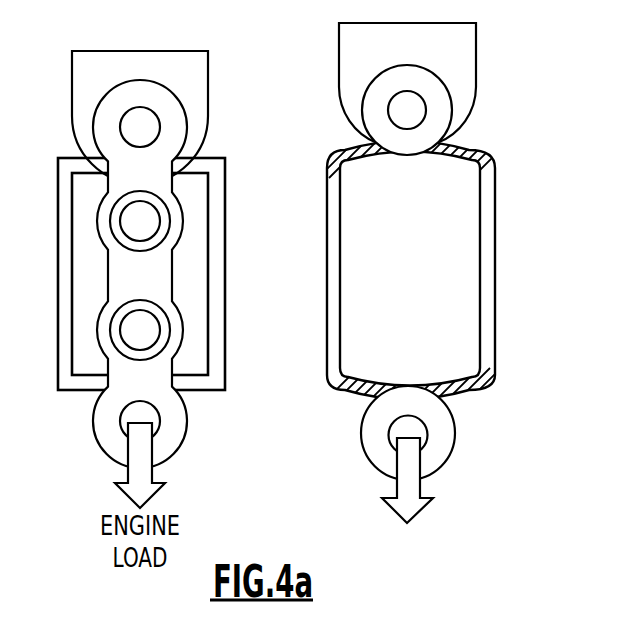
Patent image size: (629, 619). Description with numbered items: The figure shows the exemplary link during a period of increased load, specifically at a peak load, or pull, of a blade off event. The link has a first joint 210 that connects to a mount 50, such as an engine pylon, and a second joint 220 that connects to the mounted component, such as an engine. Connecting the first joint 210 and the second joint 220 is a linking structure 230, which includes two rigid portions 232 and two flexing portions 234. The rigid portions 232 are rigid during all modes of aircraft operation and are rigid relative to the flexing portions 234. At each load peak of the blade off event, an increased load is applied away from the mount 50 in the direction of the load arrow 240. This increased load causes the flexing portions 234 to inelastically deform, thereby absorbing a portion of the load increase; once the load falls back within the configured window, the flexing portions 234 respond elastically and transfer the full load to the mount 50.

The mount 50 is at (467, 46).
The first joint 210 is at (445, 100).
The second joint 220 is at (378, 447).
The linking structure 230 is at (448, 275).
The rigid portion 232 is at (333, 252).
The flexing portion 234 is at (472, 147).
The load arrow 240 is at (413, 488).